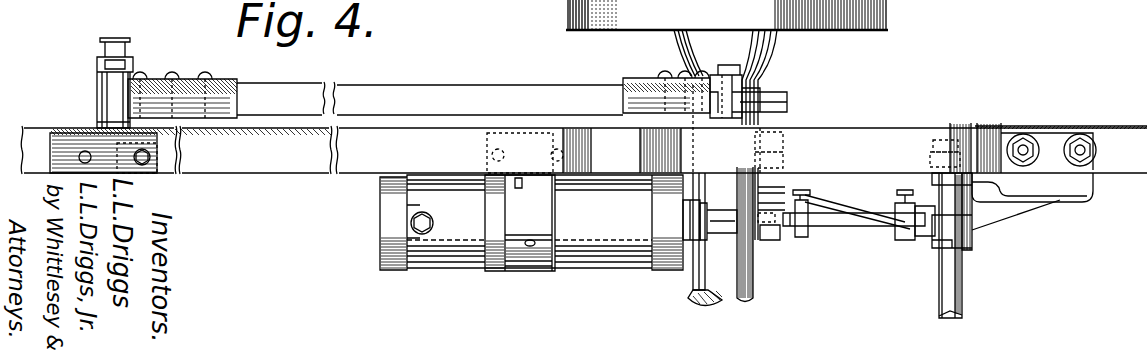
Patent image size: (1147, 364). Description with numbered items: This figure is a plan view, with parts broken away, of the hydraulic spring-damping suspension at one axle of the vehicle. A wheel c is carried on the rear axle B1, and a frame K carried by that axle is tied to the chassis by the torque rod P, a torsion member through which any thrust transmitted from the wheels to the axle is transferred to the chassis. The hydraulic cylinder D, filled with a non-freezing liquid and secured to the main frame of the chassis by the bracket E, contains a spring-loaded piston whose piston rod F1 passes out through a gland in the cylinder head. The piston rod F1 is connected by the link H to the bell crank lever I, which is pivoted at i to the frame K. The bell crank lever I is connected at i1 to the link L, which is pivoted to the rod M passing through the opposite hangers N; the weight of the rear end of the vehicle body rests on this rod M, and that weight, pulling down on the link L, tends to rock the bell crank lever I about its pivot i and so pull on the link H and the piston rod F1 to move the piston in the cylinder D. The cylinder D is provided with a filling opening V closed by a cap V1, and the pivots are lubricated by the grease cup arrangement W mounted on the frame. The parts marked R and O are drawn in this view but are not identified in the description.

The wheel c is at (806, 15).
The torque rod P is at (343, 93).
The frame K is at (767, 127).
The grease cup arrangement W is at (100, 40).
The lower rail R is at (233, 172).
The clamp block O is at (97, 127).
The hanger N is at (1060, 203).
The hydraulic cylinder D is at (445, 270).
The bracket E is at (547, 273).
The filling opening V is at (406, 223).
The cap V1 is at (406, 219).
The rear axle B1 is at (695, 292).
The piston rod F1 is at (725, 233).
The pivot i is at (773, 210).
The link H is at (837, 227).
The bell crank lever I is at (860, 190).
The connection i1 is at (935, 252).
The link L is at (972, 235).
The rod M is at (943, 290).